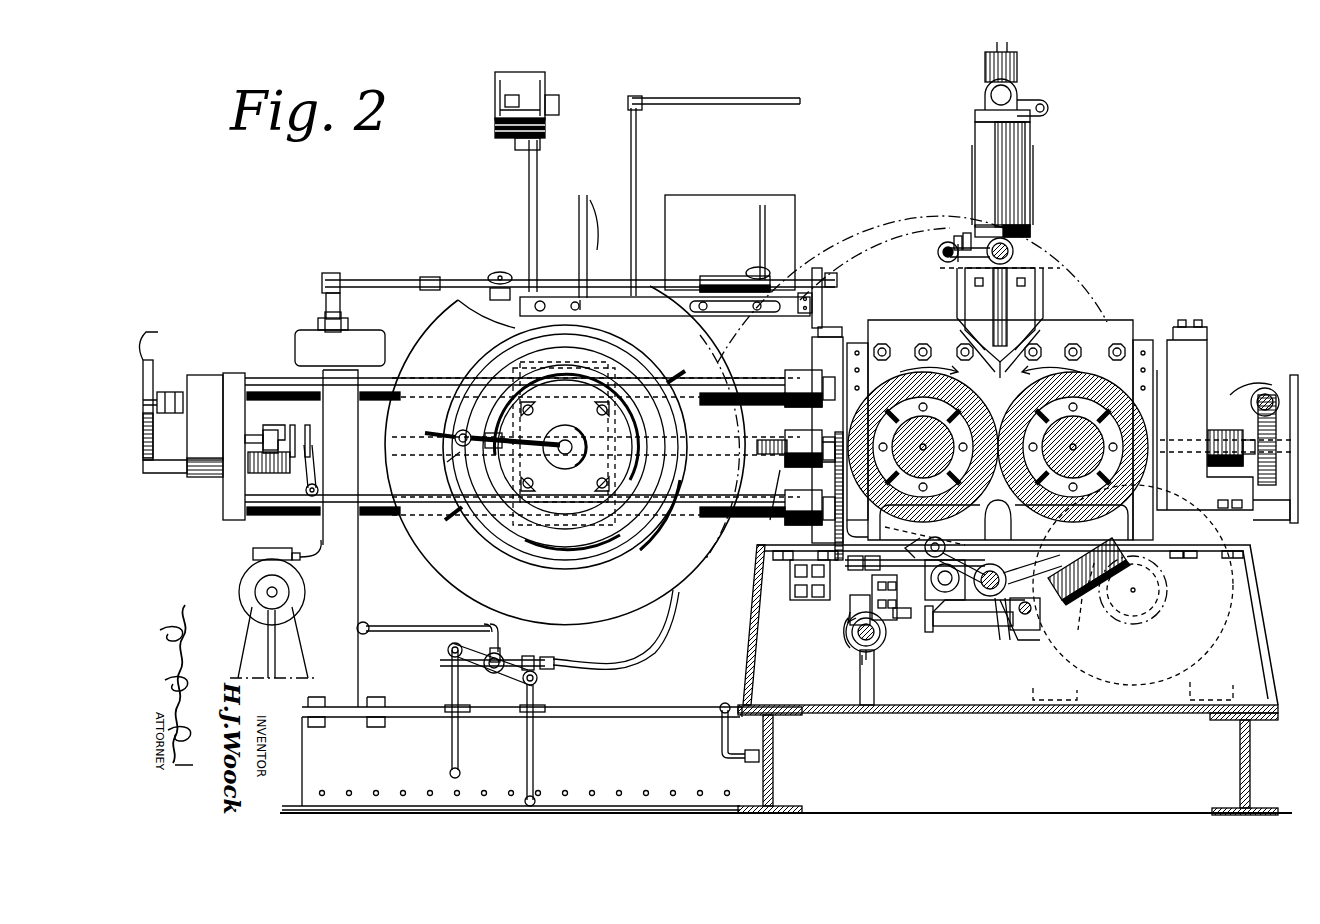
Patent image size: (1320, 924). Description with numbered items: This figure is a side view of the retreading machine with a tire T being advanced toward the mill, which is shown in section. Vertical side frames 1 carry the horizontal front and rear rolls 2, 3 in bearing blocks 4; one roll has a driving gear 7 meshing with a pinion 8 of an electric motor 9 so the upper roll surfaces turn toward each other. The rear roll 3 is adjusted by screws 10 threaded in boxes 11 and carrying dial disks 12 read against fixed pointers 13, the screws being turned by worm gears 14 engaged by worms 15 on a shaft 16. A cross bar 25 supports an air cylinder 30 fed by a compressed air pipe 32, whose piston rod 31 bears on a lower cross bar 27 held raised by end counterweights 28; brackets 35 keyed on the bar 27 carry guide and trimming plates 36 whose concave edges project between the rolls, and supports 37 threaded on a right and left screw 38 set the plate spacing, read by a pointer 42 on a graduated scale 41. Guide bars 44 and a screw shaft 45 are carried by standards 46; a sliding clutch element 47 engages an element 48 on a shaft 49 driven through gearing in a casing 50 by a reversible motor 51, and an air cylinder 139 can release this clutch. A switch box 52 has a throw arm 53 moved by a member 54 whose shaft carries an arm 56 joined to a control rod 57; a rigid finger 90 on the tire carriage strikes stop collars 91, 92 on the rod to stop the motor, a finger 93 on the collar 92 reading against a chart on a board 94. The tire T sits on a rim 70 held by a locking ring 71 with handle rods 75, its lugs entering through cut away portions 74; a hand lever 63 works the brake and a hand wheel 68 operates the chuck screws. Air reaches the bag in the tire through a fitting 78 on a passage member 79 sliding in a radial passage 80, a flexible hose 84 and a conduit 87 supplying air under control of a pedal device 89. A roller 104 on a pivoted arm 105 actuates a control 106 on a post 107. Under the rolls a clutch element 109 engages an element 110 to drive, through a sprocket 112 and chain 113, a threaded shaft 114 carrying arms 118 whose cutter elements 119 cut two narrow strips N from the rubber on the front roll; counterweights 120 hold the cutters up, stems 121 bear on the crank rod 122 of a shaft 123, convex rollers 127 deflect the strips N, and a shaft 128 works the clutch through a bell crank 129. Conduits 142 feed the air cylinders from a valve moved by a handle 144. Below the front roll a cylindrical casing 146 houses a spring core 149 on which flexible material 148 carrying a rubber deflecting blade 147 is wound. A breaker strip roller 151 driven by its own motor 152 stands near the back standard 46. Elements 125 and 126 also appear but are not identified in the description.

The vertical side frames 1 is at (745, 654).
The front roll 2 is at (902, 370).
The rear roll 3 is at (1078, 390).
The bearing blocks 4 is at (975, 520).
The driving gear 7 is at (1086, 604).
The pinion 8 is at (1100, 610).
The electric motor 9 is at (1200, 655).
The screws 10 is at (1240, 430).
The boxes 11 is at (1212, 434).
The dial disks 12 is at (1290, 520).
The fixed pointers 13 is at (1292, 385).
The worm gears 14 is at (1266, 485).
The worms 15 is at (1260, 390).
The shaft 16 is at (1262, 390).
The cross bar 25 is at (1013, 90).
The cross bar 27 is at (1015, 250).
The end counterweights 28 is at (1030, 168).
The air cylinder 30 is at (1012, 200).
The piston rod 31 is at (1030, 232).
The compressed air feed pipe 32 is at (1047, 108).
The brackets 35 is at (1027, 302).
The guide and trimming plates 36 is at (1037, 330).
The supports 37 is at (940, 260).
The screw 38 is at (943, 243).
The horizontal graduated scale 41 is at (967, 238).
The pointer 42 is at (957, 240).
The guide bars 44 is at (726, 384).
The screw shaft 45 is at (757, 440).
The standards 46 is at (805, 410).
The sliding clutch element 47 is at (284, 440).
The clutch element 48 is at (262, 440).
The shaft 49 is at (258, 444).
The casing 50 is at (200, 483).
The reversible electric motor 51 is at (158, 335).
The switch box 52 is at (372, 333).
The throw arm 53 is at (328, 334).
The member 54 is at (322, 320).
The arm 56 is at (324, 290).
The control rod 57 is at (380, 282).
The hand lever 63 is at (600, 242).
The hand wheel 68 is at (597, 380).
The rim 70 is at (600, 565).
The locking ring 71 is at (494, 548).
The cut away portions 74 is at (561, 563).
The handle rods 75 is at (447, 525).
The fitting 78 is at (455, 445).
The air passage member 79 is at (460, 470).
The passage 80 is at (461, 430).
The flexible air hose 84 is at (625, 670).
The conduit 87 is at (392, 633).
The pedal device 89 is at (528, 752).
The rigid finger 90 is at (590, 315).
The stop collar 91 is at (498, 273).
The stop collar 92 is at (718, 280).
The finger 93 is at (766, 206).
The fixed vertical board 94 is at (732, 196).
The roller 104 is at (584, 296).
The horizontal arm 105 is at (527, 306).
The control 106 is at (542, 90).
The post 107 is at (538, 178).
The clutch element 109 is at (855, 608).
The cooperating clutch element 110 is at (845, 585).
The sprocket 112 is at (833, 428).
The chain 113 is at (780, 462).
The shaft 114 is at (1010, 595).
The arms 118 is at (1002, 527).
The cutter elements 119 is at (940, 525).
The counterweights 120 is at (1068, 580).
The stems 121 is at (995, 598).
The crank rod 122 is at (948, 592).
The shaft 123 is at (1022, 630).
The rod 125 is at (932, 630).
The link 126 is at (955, 628).
The rollers 127 is at (800, 576).
The shaft 128 is at (905, 622).
The bell crank 129 is at (910, 622).
The air cylinder 139 is at (268, 468).
The conduits 142 is at (723, 735).
The handle 144 is at (705, 105).
The cylindrical casing 146 is at (866, 652).
The rubber deflecting blade 147 is at (850, 648).
The flexible material 148 is at (868, 660).
The spring actuated core 149 is at (866, 655).
The roller 151 is at (297, 578).
The individual motor 152 is at (357, 603).
The narrow strips N is at (885, 527).
The tire T is at (662, 583).